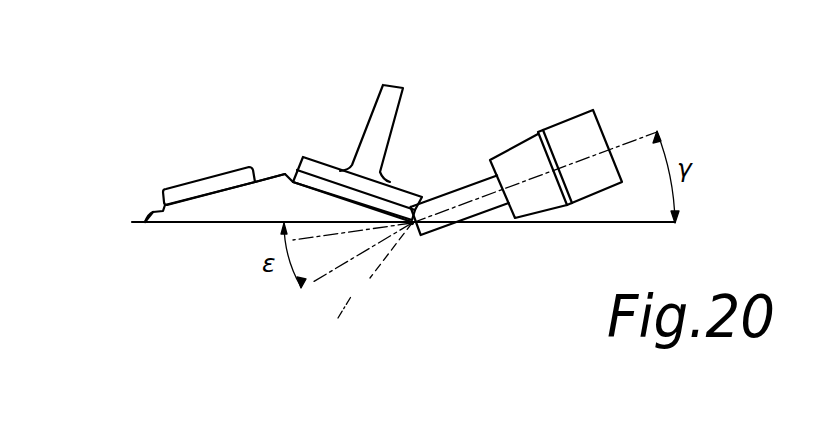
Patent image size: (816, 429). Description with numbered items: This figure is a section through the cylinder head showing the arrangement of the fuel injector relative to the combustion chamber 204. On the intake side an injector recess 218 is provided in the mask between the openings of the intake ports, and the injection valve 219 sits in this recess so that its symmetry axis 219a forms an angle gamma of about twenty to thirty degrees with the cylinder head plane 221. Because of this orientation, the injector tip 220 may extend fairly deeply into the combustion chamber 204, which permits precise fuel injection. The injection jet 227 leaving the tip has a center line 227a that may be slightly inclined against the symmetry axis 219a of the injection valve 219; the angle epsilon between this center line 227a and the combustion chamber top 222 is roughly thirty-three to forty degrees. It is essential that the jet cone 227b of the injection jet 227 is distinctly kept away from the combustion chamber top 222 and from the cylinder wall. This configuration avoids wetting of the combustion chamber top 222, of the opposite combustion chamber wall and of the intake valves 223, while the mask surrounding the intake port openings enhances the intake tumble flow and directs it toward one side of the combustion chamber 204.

The combustion chamber 204 is at (292, 215).
The injector recess 218 is at (412, 223).
The injection valve 219 is at (517, 162).
The symmetry axis of the injection valve 219a is at (625, 143).
The injector tip 220 is at (420, 197).
The cylinder head plane 221 is at (155, 212).
The combustion chamber top 222 is at (283, 173).
The intake valves 223 is at (388, 98).
The injection jet 227 is at (342, 290).
The center line of the injection jet 227a is at (313, 282).
The jet cone 227b is at (370, 278).